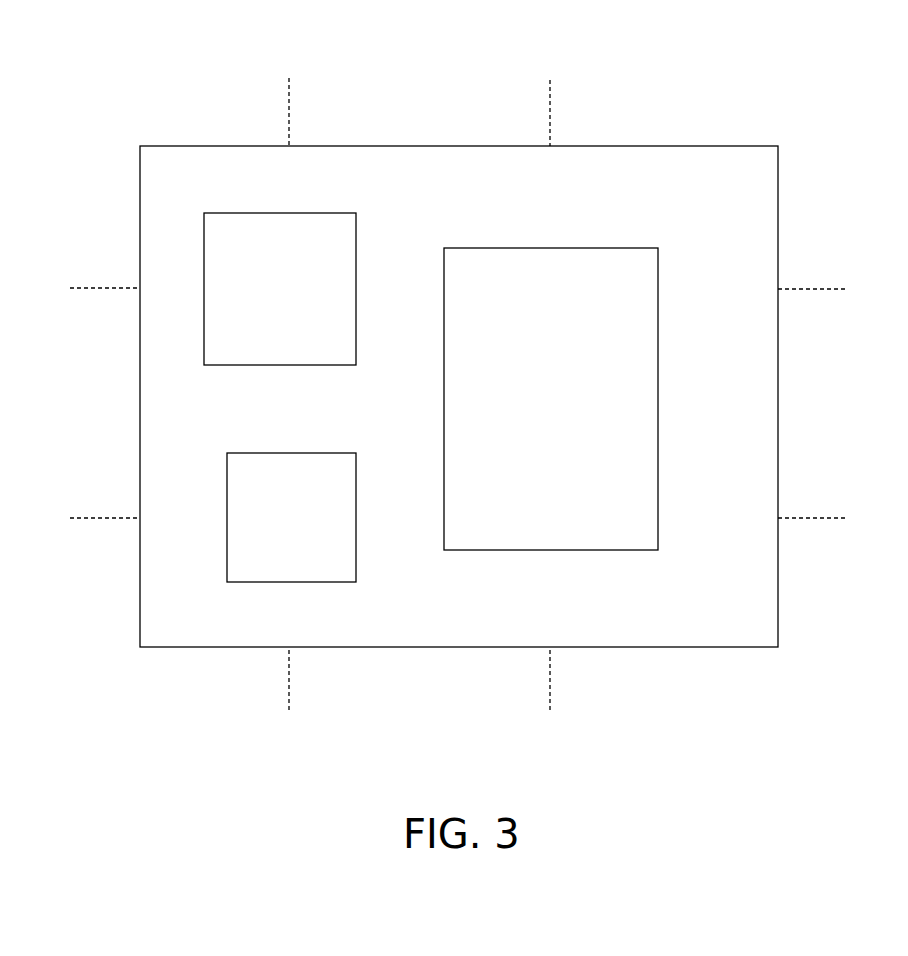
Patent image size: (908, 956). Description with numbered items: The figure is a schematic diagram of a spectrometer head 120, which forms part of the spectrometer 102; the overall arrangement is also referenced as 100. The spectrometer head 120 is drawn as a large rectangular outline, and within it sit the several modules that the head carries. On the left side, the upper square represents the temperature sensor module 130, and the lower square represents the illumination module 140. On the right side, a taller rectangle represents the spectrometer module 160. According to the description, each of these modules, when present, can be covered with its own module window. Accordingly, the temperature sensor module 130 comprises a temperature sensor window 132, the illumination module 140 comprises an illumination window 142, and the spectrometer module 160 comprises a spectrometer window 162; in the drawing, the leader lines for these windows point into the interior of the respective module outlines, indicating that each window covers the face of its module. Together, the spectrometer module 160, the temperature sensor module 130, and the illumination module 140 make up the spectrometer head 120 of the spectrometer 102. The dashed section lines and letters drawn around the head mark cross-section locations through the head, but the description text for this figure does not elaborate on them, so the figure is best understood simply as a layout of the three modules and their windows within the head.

The device 100 is at (791, 86).
The spectrometer 102 is at (646, 43).
The spectrometer head 120 is at (230, 172).
The temperature sensor module 130 is at (250, 245).
The temperature sensor window 132 is at (227, 297).
The illumination module 140 is at (250, 465).
The illumination window 142 is at (258, 527).
The spectrometer module 160 is at (625, 276).
The spectrometer window 162 is at (578, 407).